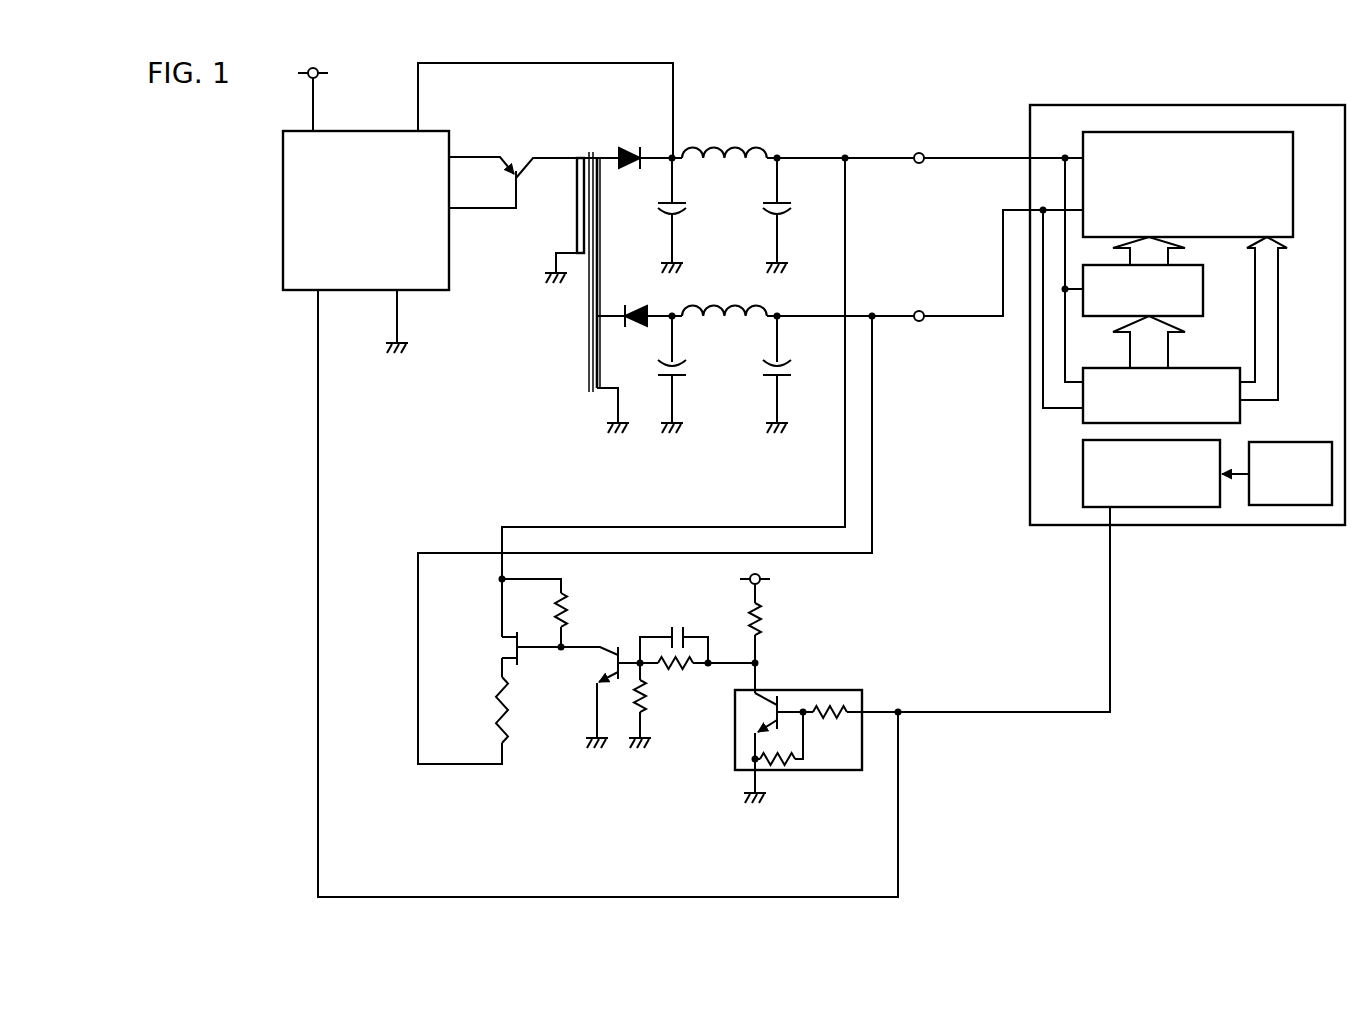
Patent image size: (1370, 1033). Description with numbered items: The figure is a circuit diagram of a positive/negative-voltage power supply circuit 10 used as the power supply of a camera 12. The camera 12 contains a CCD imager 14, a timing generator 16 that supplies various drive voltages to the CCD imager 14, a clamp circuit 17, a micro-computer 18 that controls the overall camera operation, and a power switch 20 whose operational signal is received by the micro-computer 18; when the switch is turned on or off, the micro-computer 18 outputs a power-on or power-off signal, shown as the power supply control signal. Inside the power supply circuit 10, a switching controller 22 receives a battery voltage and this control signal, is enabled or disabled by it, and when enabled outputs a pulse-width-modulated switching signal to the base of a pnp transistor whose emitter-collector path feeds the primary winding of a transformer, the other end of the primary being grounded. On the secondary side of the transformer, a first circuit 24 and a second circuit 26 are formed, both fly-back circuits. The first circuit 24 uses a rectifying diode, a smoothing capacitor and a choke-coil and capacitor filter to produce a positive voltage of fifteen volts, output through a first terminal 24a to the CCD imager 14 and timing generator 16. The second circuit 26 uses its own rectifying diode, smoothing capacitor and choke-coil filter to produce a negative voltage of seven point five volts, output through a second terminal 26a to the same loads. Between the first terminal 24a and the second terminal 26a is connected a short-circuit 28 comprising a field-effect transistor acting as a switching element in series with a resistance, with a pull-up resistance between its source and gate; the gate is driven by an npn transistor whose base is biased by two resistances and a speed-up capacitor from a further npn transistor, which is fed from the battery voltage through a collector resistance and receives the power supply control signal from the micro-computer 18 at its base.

The positive/negative-voltage power supply circuit 10 is at (816, 70).
The camera 12 is at (1158, 115).
The CCD imager 14 is at (1292, 167).
The timing generator 16 is at (1227, 410).
The clamp circuit 17 is at (1197, 290).
The micro-computer 18 is at (1108, 460).
The power switch 20 is at (1290, 443).
The switching controller 22 is at (318, 147).
The first circuit 24 is at (930, 122).
The first terminal 24a is at (920, 153).
The second circuit 26 is at (930, 265).
The second terminal 26a is at (920, 311).
The short-circuit 28 is at (430, 658).